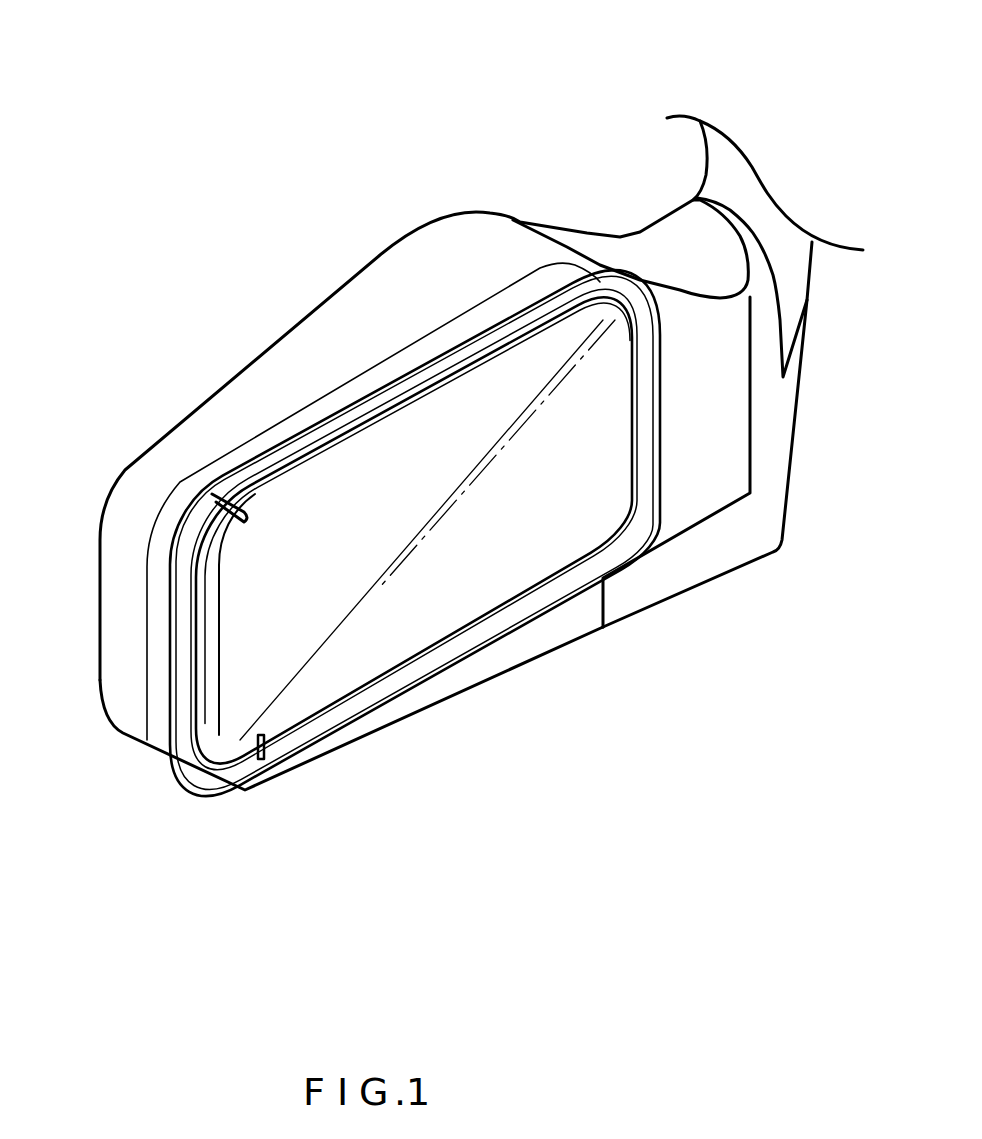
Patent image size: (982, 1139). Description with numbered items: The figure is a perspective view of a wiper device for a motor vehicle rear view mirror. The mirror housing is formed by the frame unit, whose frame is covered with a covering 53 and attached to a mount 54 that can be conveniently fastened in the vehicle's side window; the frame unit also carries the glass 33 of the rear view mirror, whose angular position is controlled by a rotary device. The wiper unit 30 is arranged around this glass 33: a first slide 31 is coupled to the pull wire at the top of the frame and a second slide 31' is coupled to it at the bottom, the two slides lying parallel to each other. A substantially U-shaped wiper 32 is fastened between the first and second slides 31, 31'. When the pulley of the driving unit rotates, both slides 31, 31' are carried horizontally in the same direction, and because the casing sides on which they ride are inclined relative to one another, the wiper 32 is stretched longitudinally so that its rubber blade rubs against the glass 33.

The wiper unit 30 is at (213, 740).
The first slide 31 is at (190, 383).
The second slide 31' is at (260, 843).
The wiper 32 is at (222, 541).
The glass 33 is at (398, 623).
The covering 53 is at (593, 243).
The mount 54 is at (735, 233).